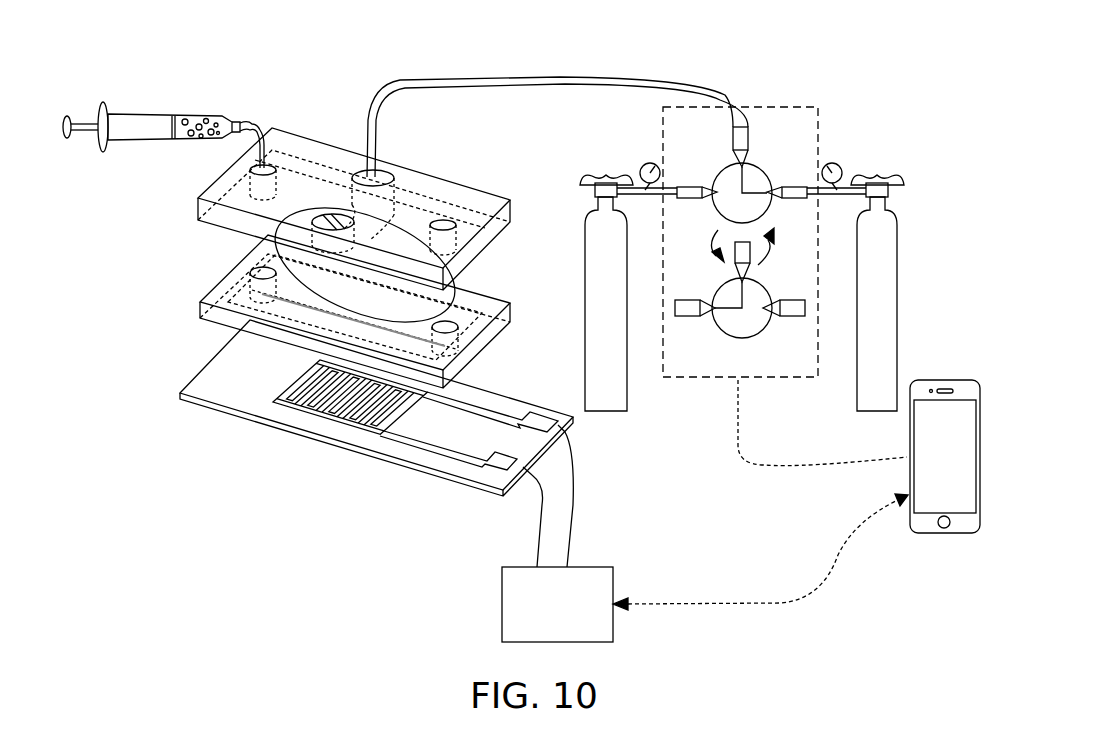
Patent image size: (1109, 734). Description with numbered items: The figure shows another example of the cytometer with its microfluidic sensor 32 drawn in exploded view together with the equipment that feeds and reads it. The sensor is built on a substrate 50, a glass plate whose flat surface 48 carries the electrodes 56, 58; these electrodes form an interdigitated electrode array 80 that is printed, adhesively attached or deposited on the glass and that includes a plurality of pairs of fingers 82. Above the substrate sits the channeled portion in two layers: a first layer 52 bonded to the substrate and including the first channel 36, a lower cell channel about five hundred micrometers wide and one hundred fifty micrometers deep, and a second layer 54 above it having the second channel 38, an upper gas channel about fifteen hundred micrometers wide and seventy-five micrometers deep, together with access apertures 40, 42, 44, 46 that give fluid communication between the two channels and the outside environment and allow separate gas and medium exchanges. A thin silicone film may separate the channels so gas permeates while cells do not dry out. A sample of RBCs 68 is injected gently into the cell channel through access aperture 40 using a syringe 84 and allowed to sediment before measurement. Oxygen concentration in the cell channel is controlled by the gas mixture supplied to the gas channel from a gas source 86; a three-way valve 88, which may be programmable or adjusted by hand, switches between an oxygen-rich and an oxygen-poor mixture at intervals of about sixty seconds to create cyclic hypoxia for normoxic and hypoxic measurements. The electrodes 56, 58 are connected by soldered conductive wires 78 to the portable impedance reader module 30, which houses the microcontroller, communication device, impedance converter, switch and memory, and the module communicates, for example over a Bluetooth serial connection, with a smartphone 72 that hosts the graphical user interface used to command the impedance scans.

The portable impedance reader module 30 is at (571, 619).
The microfluidic sensor 32 is at (348, 108).
The first channel 36 is at (450, 300).
The second channel 38 is at (368, 227).
The access aperture 40 is at (247, 180).
The access aperture 42 is at (450, 240).
The access aperture 44 is at (390, 175).
The access aperture 46 is at (262, 244).
The flat surface 48 is at (248, 378).
The substrate 50 is at (360, 423).
The first layer 52 is at (331, 286).
The second layer 54 is at (356, 206).
The electrode 56 is at (503, 410).
The electrode 58 is at (395, 435).
The RBCs 68 is at (203, 96).
The smartphone 72 is at (952, 378).
The conductive wires 78 is at (535, 545).
The interdigitated electrode array 80 is at (404, 436).
The fingers 82 is at (390, 408).
The syringe 84 is at (145, 112).
The gas source 86 is at (628, 402).
The three-way valve 88 is at (779, 92).